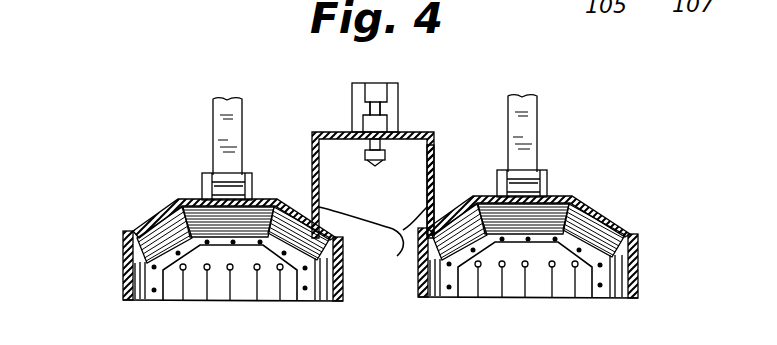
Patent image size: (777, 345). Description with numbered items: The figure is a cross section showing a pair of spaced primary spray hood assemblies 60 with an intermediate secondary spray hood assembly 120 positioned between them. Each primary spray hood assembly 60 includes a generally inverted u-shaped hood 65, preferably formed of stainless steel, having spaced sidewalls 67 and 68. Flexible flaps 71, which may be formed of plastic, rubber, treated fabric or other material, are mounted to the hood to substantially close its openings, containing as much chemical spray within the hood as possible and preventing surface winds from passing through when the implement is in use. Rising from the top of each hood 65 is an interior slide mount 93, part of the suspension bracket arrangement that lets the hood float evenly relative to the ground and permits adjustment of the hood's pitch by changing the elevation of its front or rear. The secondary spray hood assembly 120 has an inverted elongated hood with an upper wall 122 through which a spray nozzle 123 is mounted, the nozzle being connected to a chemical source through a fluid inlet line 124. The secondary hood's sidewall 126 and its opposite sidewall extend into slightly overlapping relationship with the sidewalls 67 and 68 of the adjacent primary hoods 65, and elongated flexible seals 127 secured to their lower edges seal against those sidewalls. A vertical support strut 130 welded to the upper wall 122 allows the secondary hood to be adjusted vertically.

The primary spray hood assembly 60 is at (117, 280).
The hood 65 is at (120, 230).
The sidewall 67 is at (418, 286).
The sidewall 68 is at (357, 312).
The flexible flaps 71 is at (220, 291).
The interior slide mount 93 is at (213, 118).
The secondary spray hood assembly 120 is at (330, 125).
The upper wall 122 is at (403, 127).
The spray nozzle 123 is at (372, 166).
The fluid inlet line 124 is at (397, 85).
The sidewall 126 is at (492, 143).
The elongated flexible seal 127 is at (398, 256).
The vertical support strut 130 is at (352, 97).